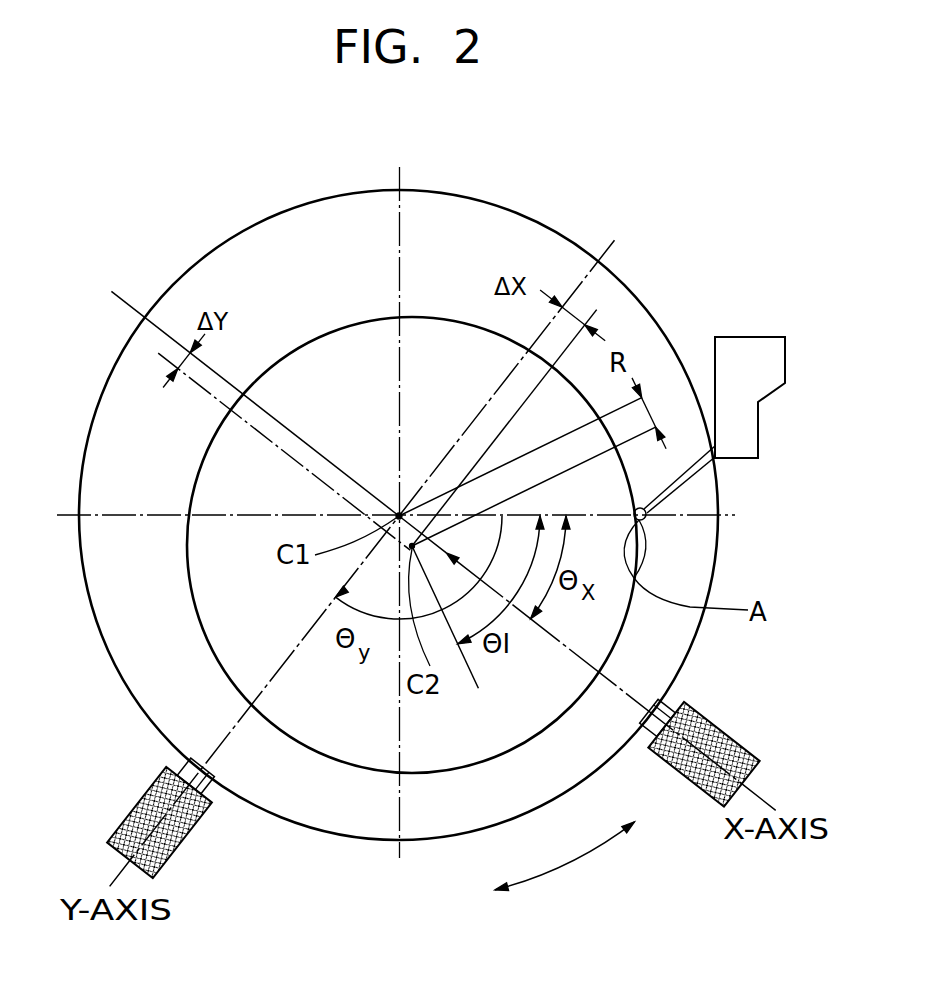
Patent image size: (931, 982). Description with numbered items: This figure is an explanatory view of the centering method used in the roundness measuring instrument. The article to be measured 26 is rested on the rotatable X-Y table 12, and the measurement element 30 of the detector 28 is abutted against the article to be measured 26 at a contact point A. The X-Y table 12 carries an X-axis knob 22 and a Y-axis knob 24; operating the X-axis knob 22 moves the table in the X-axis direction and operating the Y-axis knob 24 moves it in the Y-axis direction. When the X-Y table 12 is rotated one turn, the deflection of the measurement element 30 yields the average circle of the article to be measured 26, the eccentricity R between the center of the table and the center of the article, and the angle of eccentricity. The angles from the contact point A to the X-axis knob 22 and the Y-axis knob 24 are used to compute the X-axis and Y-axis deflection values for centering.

The X-Y table 12 is at (466, 198).
The X-axis knob 22 is at (727, 737).
The Y-axis knob 24 is at (182, 847).
The article to be measured 26 is at (318, 350).
The detector 28 is at (743, 360).
The measurement element 30 is at (648, 522).